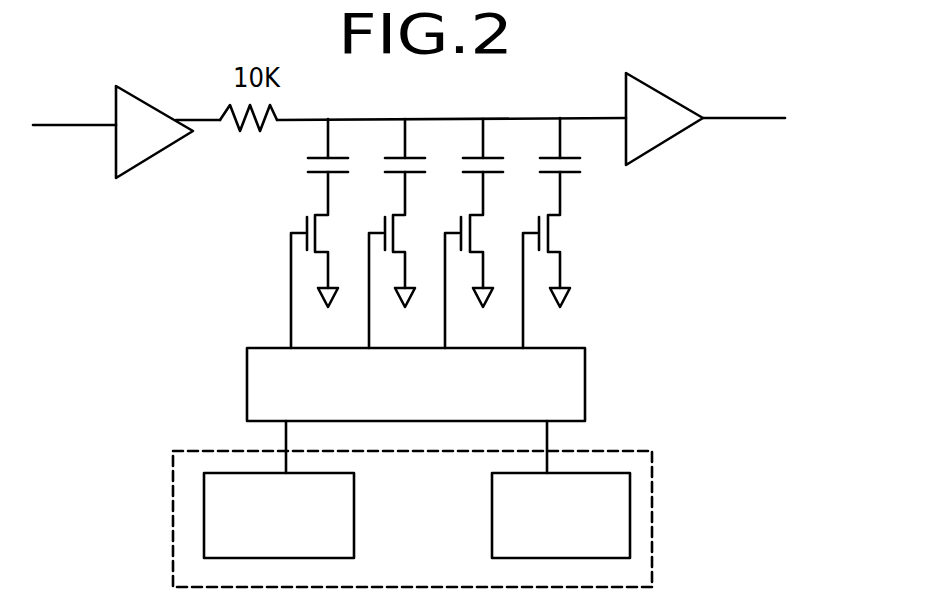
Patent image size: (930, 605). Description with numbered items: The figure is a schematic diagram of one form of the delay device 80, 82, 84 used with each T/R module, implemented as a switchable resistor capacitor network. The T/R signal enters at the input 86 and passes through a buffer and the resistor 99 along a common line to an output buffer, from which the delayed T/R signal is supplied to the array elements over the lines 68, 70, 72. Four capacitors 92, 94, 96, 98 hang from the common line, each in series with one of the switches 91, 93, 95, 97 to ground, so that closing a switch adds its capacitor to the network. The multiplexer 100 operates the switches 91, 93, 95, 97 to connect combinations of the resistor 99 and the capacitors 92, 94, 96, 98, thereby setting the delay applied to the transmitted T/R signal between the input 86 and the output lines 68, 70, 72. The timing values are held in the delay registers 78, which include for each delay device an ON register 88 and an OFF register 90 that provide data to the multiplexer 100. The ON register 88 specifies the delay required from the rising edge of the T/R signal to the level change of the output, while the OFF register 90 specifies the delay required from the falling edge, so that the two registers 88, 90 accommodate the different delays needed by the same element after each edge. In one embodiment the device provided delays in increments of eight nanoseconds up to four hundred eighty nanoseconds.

The input 86 is at (72, 125).
The resistor 99 is at (173, 143).
The capacitor 92 is at (325, 176).
The capacitor 94 is at (403, 176).
The capacitor 96 is at (479, 176).
The capacitor 98 is at (552, 176).
The switch 91 is at (302, 240).
The switch 93 is at (379, 241).
The switch 95 is at (462, 236).
The switch 97 is at (548, 240).
The multiplexer 100 is at (585, 397).
The delay registers 78 is at (655, 493).
The OFF register 90 is at (357, 490).
The ON register 88 is at (492, 519).
The line 68 is at (731, 136).
The line 70 is at (731, 136).
The line 72 is at (720, 121).
The delay device 80 is at (513, 233).
The delay device 82 is at (513, 233).
The delay device 84 is at (513, 233).